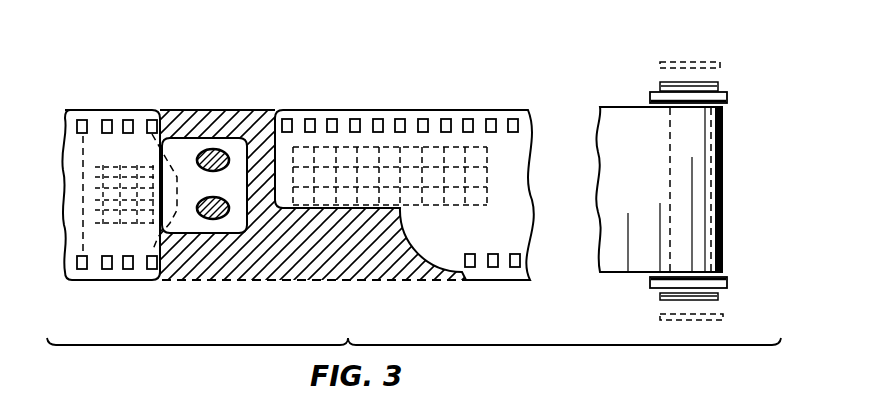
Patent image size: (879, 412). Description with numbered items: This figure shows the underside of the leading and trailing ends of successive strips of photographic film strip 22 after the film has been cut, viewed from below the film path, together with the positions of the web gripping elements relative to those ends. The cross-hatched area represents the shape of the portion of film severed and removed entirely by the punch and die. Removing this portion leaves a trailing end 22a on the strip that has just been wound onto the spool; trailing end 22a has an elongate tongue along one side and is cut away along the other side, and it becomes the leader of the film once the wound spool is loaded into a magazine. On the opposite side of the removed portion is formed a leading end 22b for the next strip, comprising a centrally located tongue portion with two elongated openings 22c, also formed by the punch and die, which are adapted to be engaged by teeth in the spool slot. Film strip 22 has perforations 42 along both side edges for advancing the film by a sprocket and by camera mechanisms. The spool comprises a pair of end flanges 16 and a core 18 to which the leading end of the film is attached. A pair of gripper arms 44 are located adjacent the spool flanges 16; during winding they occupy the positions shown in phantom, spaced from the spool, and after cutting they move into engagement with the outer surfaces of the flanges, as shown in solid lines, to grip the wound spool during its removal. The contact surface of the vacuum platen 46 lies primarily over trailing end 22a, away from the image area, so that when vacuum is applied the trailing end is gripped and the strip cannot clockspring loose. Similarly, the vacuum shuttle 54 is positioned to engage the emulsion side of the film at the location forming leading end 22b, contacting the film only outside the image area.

The photographic film strip 22 is at (530, 246).
The trailing end 22a is at (368, 110).
The leading end 22b is at (84, 110).
The elongated openings 22c is at (215, 171).
The perforations 42 is at (488, 114).
The vacuum platen 46 is at (517, 157).
The vacuum shuttle 54 is at (64, 214).
The end flanges 16 is at (726, 101).
The core 18 is at (729, 187).
The gripper arms 44 is at (714, 83).